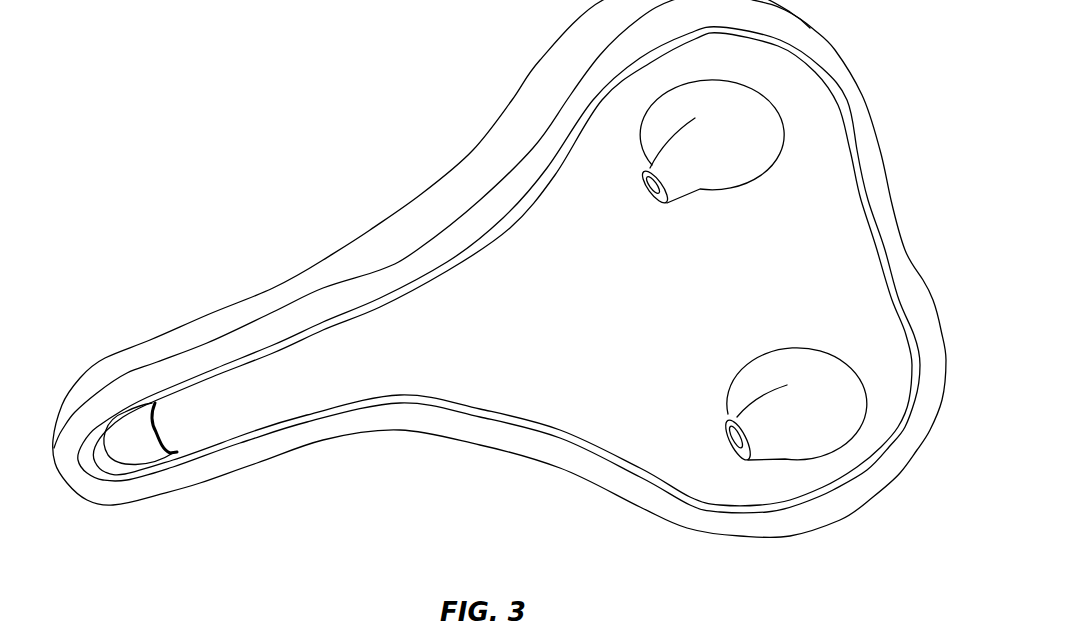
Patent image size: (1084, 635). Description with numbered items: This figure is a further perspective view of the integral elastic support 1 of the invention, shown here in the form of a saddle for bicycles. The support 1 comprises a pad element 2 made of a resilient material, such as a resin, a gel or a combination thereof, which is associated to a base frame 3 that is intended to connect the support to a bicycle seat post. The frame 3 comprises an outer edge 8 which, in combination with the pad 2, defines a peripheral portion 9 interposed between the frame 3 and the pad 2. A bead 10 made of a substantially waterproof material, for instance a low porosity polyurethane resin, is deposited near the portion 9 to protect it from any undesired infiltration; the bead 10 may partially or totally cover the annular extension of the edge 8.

The integral elastic support 1 is at (499, 269).
The pad element 2 is at (312, 380).
The base frame 3 is at (323, 283).
The outer edge 8 is at (478, 417).
The peripheral portion 9 is at (416, 250).
The bead 10 is at (582, 442).